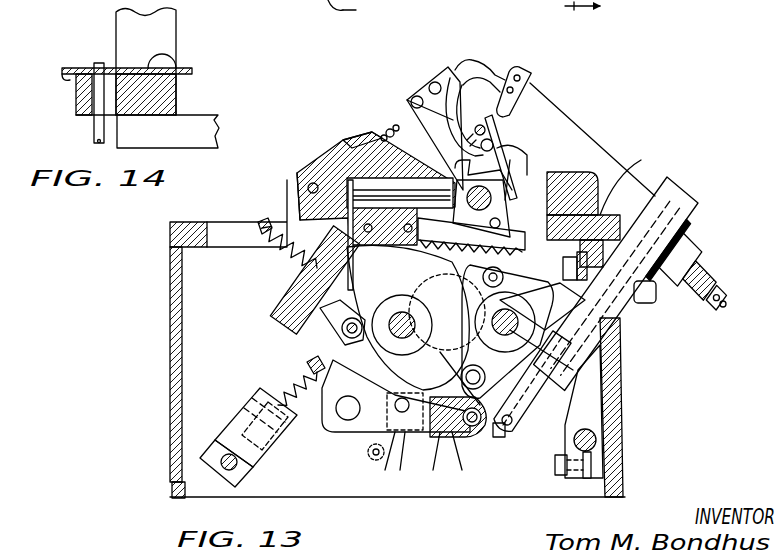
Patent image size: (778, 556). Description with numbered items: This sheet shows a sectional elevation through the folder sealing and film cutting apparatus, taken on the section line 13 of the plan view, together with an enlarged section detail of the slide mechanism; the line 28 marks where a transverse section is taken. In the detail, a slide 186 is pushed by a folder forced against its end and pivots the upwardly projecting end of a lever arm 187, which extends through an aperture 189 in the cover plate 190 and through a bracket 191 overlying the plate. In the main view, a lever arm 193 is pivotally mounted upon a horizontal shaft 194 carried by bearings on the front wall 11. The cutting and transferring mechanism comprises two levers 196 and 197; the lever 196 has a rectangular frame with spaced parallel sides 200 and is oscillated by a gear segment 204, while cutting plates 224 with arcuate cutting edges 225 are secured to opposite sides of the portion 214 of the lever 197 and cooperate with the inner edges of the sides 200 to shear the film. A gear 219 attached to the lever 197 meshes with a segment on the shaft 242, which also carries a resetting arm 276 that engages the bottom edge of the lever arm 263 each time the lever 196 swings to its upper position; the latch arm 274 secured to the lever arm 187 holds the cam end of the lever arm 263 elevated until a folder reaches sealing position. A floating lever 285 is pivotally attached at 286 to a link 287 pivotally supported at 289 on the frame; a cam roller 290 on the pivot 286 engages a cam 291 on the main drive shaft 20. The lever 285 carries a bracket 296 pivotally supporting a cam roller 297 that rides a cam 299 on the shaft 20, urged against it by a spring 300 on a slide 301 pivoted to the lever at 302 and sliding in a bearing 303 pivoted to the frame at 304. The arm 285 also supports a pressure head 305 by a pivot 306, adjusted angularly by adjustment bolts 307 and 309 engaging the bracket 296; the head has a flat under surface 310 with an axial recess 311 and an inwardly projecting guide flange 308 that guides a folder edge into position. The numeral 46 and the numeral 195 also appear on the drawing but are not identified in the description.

In FIG. 13, the front wall 11 is at (612, 448).
In FIG. 13, the section line 13— 13 is at (565, 10).
In FIG. 13, the main drive shaft 20 is at (378, 355).
In FIG. 13, the section line 28— 28 is at (311, 11).
In FIG. 13, the lever 46 is at (363, 11).
In FIG. 14, the slide 186 is at (165, 68).
In FIG. 14, the lever arm 187 is at (98, 126).
In FIG. 14, the aperture 189 is at (110, 97).
In FIG. 14, the cover plate 190 is at (215, 120).
In FIG. 14, the bracket 191 is at (165, 90).
In FIG. 13, the lever arm 193 is at (627, 317).
In FIG. 13, the horizontal shaft 194 is at (597, 437).
In FIG. 13, the bracket 195 is at (645, 303).
In FIG. 13, the lever 196 is at (418, 86).
In FIG. 13, the lever 197 is at (540, 165).
In FIG. 13, the sides 200 is at (513, 153).
In FIG. 13, the gear segment 204 is at (525, 262).
In FIG. 13, the portion of the lever 214 is at (477, 118).
In FIG. 13, the gear 219 is at (440, 243).
In FIG. 13, the cutting plates 224 is at (530, 88).
In FIG. 13, the arcuate cutting edges 225 is at (411, 103).
In FIG. 13, the shaft 242 is at (560, 365).
In FIG. 13, the lever arm 263 is at (615, 206).
In FIG. 13, the latch arm 274 is at (653, 188).
In FIG. 13, the resetting arm 276 is at (622, 340).
In FIG. 13, the floating lever 285 is at (360, 420).
In FIG. 13, the pivot 286 is at (392, 445).
In FIG. 13, the link 287 is at (450, 435).
In FIG. 13, the pivot 289 is at (470, 425).
In FIG. 13, the cam roller 290 is at (415, 435).
In FIG. 13, the cam 291 is at (390, 375).
In FIG. 13, the bracket 296 is at (310, 288).
In FIG. 13, the cam roller 297 is at (335, 338).
In FIG. 13, the cam 299 is at (447, 373).
In FIG. 13, the spring 300 is at (278, 396).
In FIG. 13, the slide 301 is at (290, 378).
In FIG. 13, the pivot 302 is at (305, 360).
In FIG. 13, the bearing 303 is at (275, 440).
In FIG. 13, the pivot 304 is at (228, 470).
In FIG. 13, the pressure head 305 is at (345, 150).
In FIG. 13, the pivot 306 is at (305, 205).
In FIG. 13, the adjustment bolt 307 is at (265, 228).
In FIG. 13, the guide flange 308 is at (383, 125).
In FIG. 13, the adjustment bolt 309 is at (275, 250).
In FIG. 13, the flat under surface 310 is at (367, 133).
In FIG. 13, the axial recess 311 is at (393, 175).